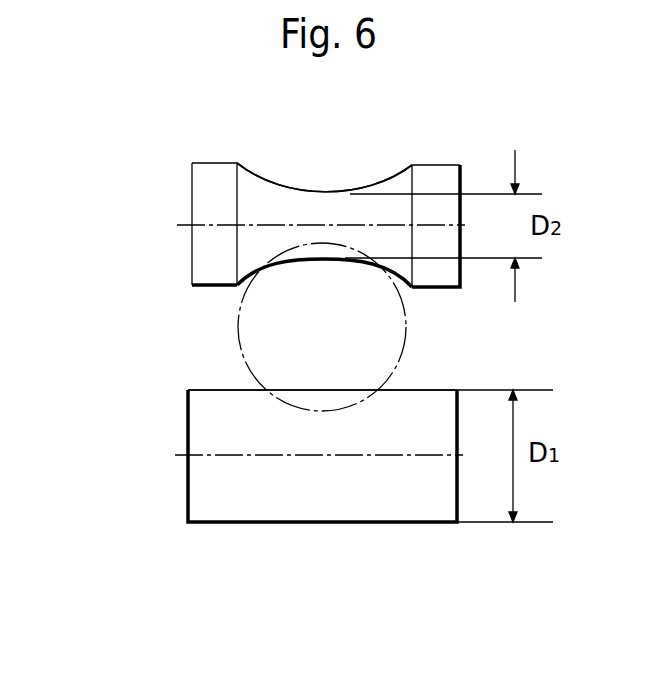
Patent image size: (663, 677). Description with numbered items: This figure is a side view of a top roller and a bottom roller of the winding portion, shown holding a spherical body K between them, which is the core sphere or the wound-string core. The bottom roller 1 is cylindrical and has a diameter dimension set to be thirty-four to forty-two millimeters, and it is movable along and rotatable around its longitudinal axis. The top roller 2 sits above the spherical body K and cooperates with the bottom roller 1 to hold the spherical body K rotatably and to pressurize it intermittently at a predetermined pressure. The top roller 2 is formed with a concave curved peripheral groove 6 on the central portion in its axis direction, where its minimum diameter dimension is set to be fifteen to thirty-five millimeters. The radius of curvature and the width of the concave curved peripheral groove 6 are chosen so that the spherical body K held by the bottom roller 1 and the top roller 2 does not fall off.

The bottom roller 1 is at (155, 468).
The top roller 2 is at (158, 235).
The concave curved peripheral groove 6 is at (272, 184).
The spherical body K is at (235, 327).